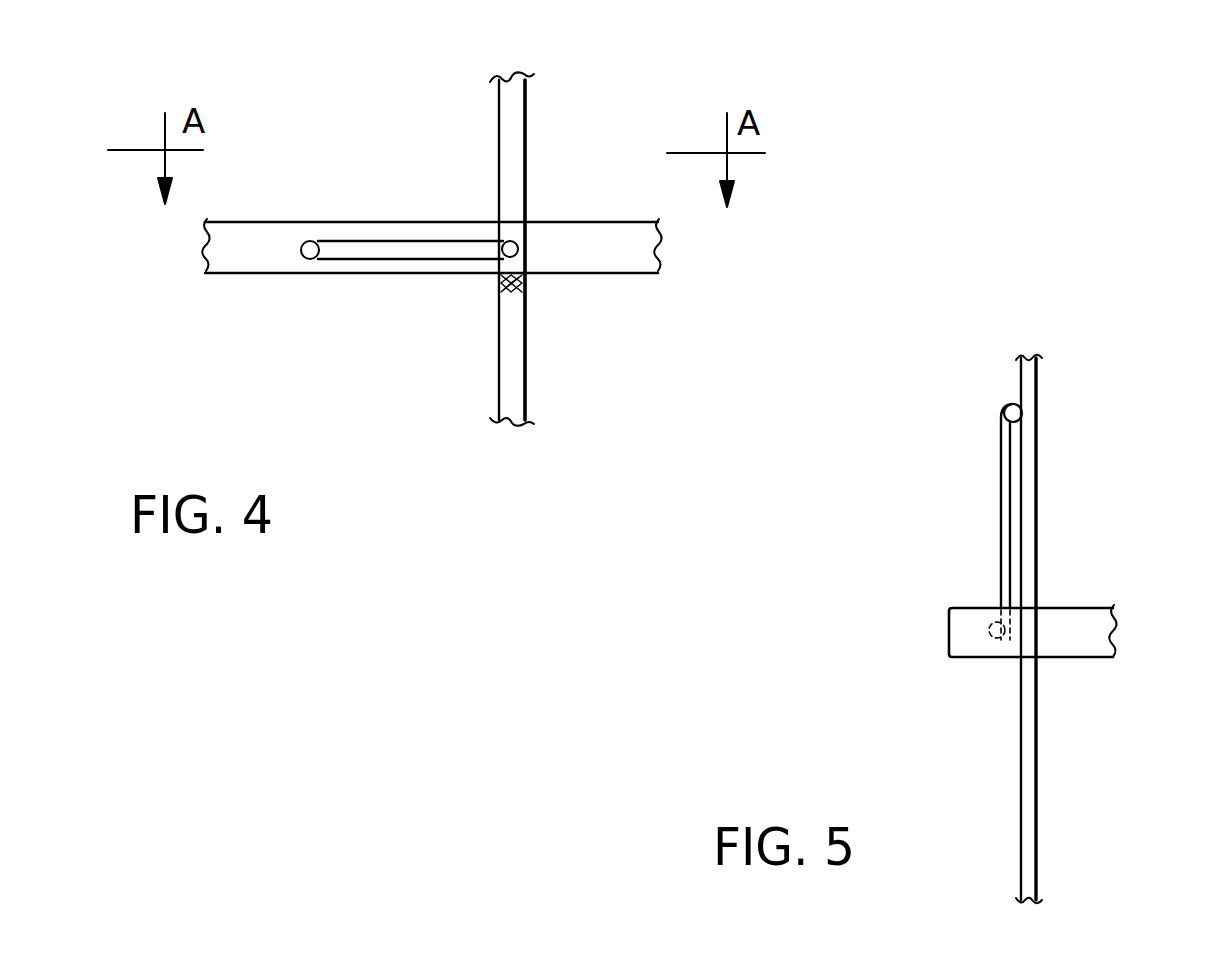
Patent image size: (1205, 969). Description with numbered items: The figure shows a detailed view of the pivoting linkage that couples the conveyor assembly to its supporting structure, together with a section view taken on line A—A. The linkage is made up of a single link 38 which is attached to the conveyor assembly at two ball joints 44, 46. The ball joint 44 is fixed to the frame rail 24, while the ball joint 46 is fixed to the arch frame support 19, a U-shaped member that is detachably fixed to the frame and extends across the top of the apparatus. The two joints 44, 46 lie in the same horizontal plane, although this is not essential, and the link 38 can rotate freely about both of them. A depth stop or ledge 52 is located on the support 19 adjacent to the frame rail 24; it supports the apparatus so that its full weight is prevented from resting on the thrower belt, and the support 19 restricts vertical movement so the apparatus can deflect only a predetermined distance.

In FIG. 4, the support 19 is at (512, 387).
In FIG. 5, the support 19 is at (1070, 608).
In FIG. 4, the frame rail 24 is at (605, 222).
In FIG. 5, the frame rail 24 is at (1037, 792).
In FIG. 4, the link 38 is at (385, 238).
In FIG. 5, the link 38 is at (997, 508).
In FIG. 4, the ball joint 44 is at (305, 258).
In FIG. 5, the ball joint 44 is at (1010, 405).
In FIG. 4, the ball joint 46 is at (517, 241).
In FIG. 5, the ball joint 46 is at (993, 638).
In FIG. 4, the depth stop 52 is at (525, 288).